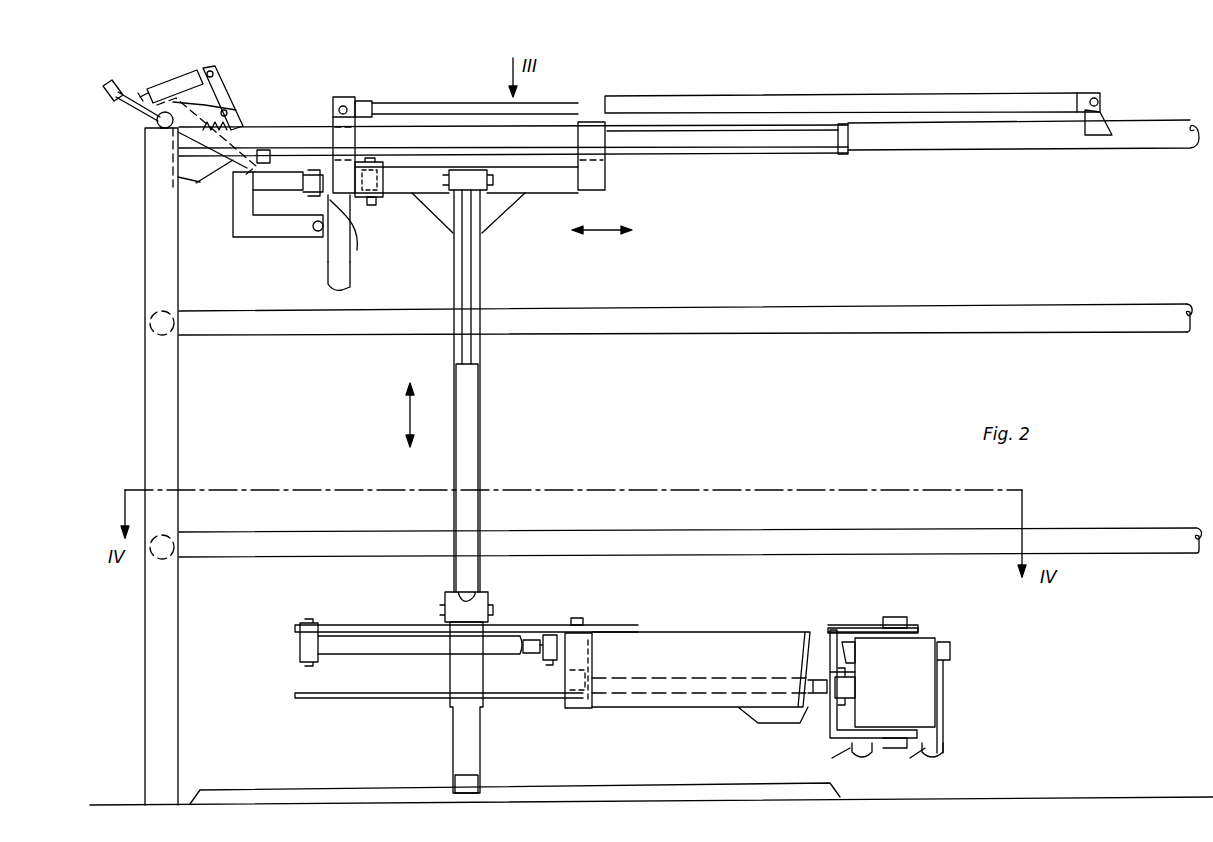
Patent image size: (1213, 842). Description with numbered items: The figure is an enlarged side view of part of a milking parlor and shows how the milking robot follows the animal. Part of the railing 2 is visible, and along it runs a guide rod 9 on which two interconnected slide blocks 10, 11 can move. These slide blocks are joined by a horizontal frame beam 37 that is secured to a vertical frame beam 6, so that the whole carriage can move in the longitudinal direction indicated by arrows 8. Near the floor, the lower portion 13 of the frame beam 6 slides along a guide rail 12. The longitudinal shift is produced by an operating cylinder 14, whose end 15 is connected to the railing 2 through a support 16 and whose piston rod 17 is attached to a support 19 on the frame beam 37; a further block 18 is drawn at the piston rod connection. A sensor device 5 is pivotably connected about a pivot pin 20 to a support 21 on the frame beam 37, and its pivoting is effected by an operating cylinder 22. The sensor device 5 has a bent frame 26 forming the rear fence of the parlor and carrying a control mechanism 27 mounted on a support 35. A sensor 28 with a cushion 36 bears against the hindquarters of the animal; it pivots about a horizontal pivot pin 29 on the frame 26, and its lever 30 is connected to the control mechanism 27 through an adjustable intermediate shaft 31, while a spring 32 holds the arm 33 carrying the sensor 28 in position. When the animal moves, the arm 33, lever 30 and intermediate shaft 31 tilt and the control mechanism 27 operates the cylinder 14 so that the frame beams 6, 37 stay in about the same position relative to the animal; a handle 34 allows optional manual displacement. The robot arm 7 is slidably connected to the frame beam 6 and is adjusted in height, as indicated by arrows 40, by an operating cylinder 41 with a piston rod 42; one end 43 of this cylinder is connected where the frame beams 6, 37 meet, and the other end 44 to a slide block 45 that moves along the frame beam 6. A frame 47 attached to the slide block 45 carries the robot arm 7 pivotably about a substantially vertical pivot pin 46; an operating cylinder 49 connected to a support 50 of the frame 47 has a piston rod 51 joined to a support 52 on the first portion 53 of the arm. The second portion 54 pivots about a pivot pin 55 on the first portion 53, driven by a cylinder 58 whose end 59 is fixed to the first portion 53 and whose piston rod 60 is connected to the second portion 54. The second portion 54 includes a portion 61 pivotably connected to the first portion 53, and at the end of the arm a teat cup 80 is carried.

The railing 2 is at (770, 530).
The sensor device 5 is at (267, 199).
The vertical frame beam 6 is at (480, 278).
The robot arm 7 is at (709, 663).
The arrows 8 is at (606, 226).
The guide rod 9 is at (305, 132).
The slide block 10 is at (583, 120).
The slide block 11 is at (327, 118).
The guide rail 12 is at (288, 772).
The lower portion 13 is at (463, 790).
The operating cylinder 14 is at (885, 100).
The end 15 is at (1100, 95).
The support 16 is at (1098, 135).
The piston rod 17 is at (458, 101).
The clamp block 18 is at (372, 105).
The support 19 is at (342, 96).
The pivot pin 20 is at (371, 206).
The support 21 is at (395, 165).
The operating cylinder 22 is at (359, 236).
The bent frame 26 is at (285, 185).
The control mechanism 27 is at (135, 137).
The sensor 28 is at (352, 281).
The horizontal pivot pin 29 is at (262, 140).
The lever 30 is at (222, 85).
The adjustable intermediate shaft 31 is at (172, 80).
The spring 32 is at (230, 103).
The arm 33 is at (255, 238).
The handle 34 is at (125, 81).
The support 35 is at (227, 165).
The cushion 36 is at (340, 262).
The horizontal frame beam 37 is at (557, 175).
The arrows 40 is at (403, 412).
The operating cylinder 41 is at (470, 437).
The piston rod 42 is at (462, 345).
The end 43 is at (462, 180).
The end 44 is at (470, 605).
The slide block 45 is at (450, 670).
The vertical pivot pin 46 is at (580, 617).
The frame 47 is at (405, 625).
The operating cylinder 49 is at (362, 640).
The support 50 is at (295, 628).
The piston rod 51 is at (532, 653).
The support 52 is at (552, 662).
The first portion 53 is at (696, 632).
The second portion 54 is at (920, 638).
The pivot pin 55 is at (905, 617).
The cylinder 58 is at (700, 683).
The end 59 is at (577, 710).
The piston rod 60 is at (808, 693).
The portion 61 is at (929, 717).
The teat cup 80 is at (943, 690).